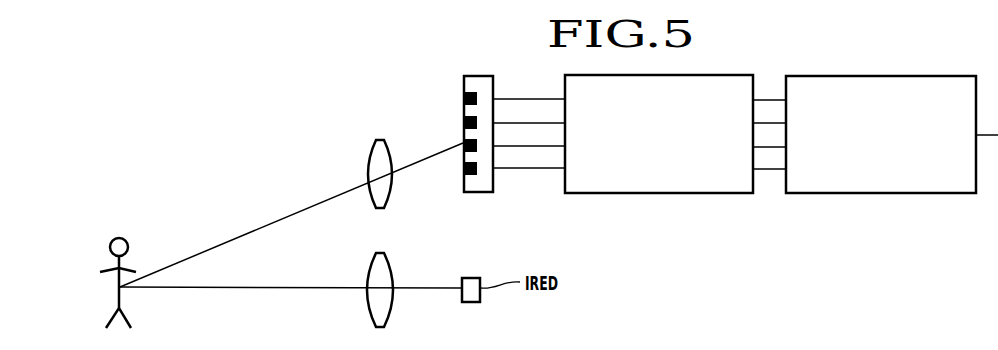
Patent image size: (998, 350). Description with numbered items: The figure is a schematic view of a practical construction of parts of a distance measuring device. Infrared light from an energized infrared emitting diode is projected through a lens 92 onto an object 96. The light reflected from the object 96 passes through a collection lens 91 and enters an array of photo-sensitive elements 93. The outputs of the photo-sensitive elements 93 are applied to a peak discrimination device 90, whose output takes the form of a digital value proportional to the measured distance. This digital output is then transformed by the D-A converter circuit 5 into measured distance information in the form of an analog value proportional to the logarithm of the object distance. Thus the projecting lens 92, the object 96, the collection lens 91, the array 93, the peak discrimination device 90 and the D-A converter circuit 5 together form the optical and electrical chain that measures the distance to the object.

The object 96 is at (124, 239).
The collection lens 91 is at (381, 140).
The lens 92 is at (385, 252).
The array of photo-sensitive elements 93 is at (480, 193).
The peak discrimination device 90 is at (688, 193).
The D-A converter circuit 5 is at (905, 193).